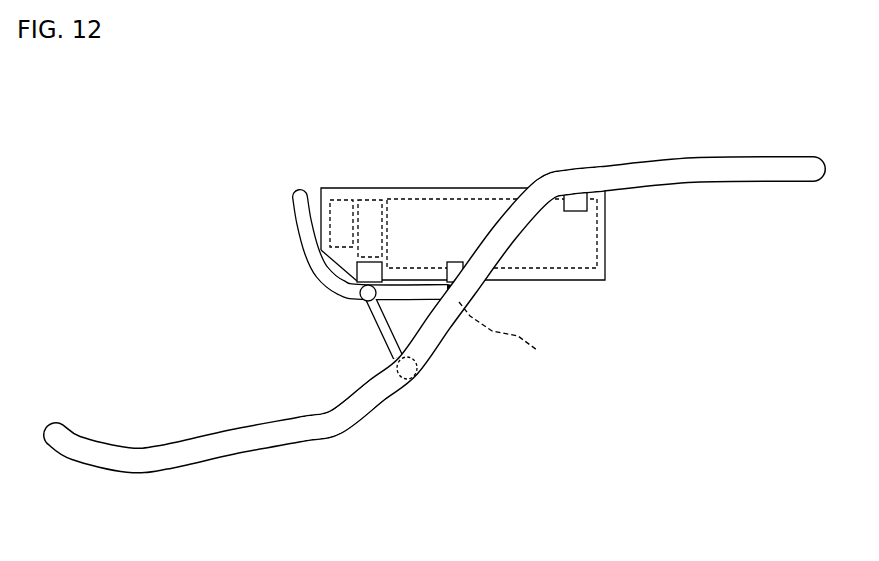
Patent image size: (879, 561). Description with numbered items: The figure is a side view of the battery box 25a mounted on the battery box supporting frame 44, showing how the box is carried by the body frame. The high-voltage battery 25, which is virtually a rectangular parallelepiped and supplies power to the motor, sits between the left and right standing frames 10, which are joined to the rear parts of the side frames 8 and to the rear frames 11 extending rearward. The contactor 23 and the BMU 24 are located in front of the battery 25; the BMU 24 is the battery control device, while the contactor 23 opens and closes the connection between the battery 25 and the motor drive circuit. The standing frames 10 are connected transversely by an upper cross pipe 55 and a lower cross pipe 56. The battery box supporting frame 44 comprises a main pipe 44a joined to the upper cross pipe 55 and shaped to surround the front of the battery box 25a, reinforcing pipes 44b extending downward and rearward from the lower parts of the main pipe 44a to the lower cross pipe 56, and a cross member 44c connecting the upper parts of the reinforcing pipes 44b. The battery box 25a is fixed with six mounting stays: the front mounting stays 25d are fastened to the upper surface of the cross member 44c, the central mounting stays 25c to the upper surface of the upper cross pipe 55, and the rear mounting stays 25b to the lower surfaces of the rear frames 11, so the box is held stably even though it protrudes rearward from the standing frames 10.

The side frame 8 is at (229, 449).
The standing frame 10 is at (437, 336).
The rear frame 11 is at (700, 167).
The contactor 23 is at (338, 197).
The BMU 24 is at (372, 200).
The high-voltage battery 25 is at (430, 174).
The battery box 25a is at (448, 180).
The rear mounting stay 25b is at (587, 211).
The central mounting stay 25c is at (452, 262).
The front mounting stay 25d is at (357, 272).
The battery box supporting frame 44 is at (315, 242).
The main pipe 44a is at (298, 216).
The reinforcing pipe 44b is at (374, 331).
The cross member 44c is at (358, 299).
The upper cross pipe 55 is at (509, 343).
The lower cross pipe 56 is at (404, 388).